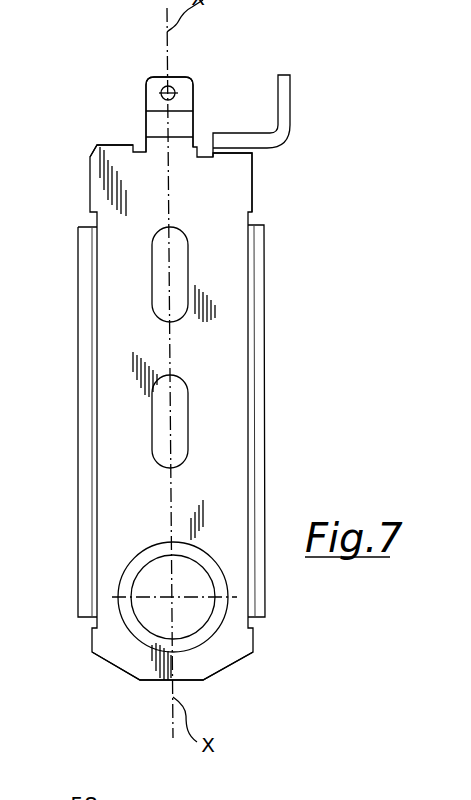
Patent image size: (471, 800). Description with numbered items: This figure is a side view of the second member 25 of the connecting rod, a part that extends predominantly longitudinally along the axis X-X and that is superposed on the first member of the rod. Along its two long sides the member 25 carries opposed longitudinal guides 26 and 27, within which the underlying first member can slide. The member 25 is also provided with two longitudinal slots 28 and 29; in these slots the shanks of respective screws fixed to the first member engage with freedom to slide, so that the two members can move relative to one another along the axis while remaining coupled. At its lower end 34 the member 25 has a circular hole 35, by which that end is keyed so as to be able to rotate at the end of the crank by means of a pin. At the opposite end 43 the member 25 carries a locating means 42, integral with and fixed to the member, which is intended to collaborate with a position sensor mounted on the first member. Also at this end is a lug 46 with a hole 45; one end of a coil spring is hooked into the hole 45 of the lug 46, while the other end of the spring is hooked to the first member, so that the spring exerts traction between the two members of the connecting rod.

The second member 25 is at (133, 343).
The longitudinal guide 26 is at (88, 433).
The longitudinal guide 27 is at (257, 265).
The longitudinal slot 28 is at (175, 277).
The longitudinal slot 29 is at (178, 413).
The end of the second member 34 is at (208, 648).
The circular hole 35 is at (160, 613).
The locating means 42 is at (290, 100).
The end of the second member 43 is at (227, 173).
The hole of the lug 45 is at (164, 86).
The lug 46 is at (153, 121).